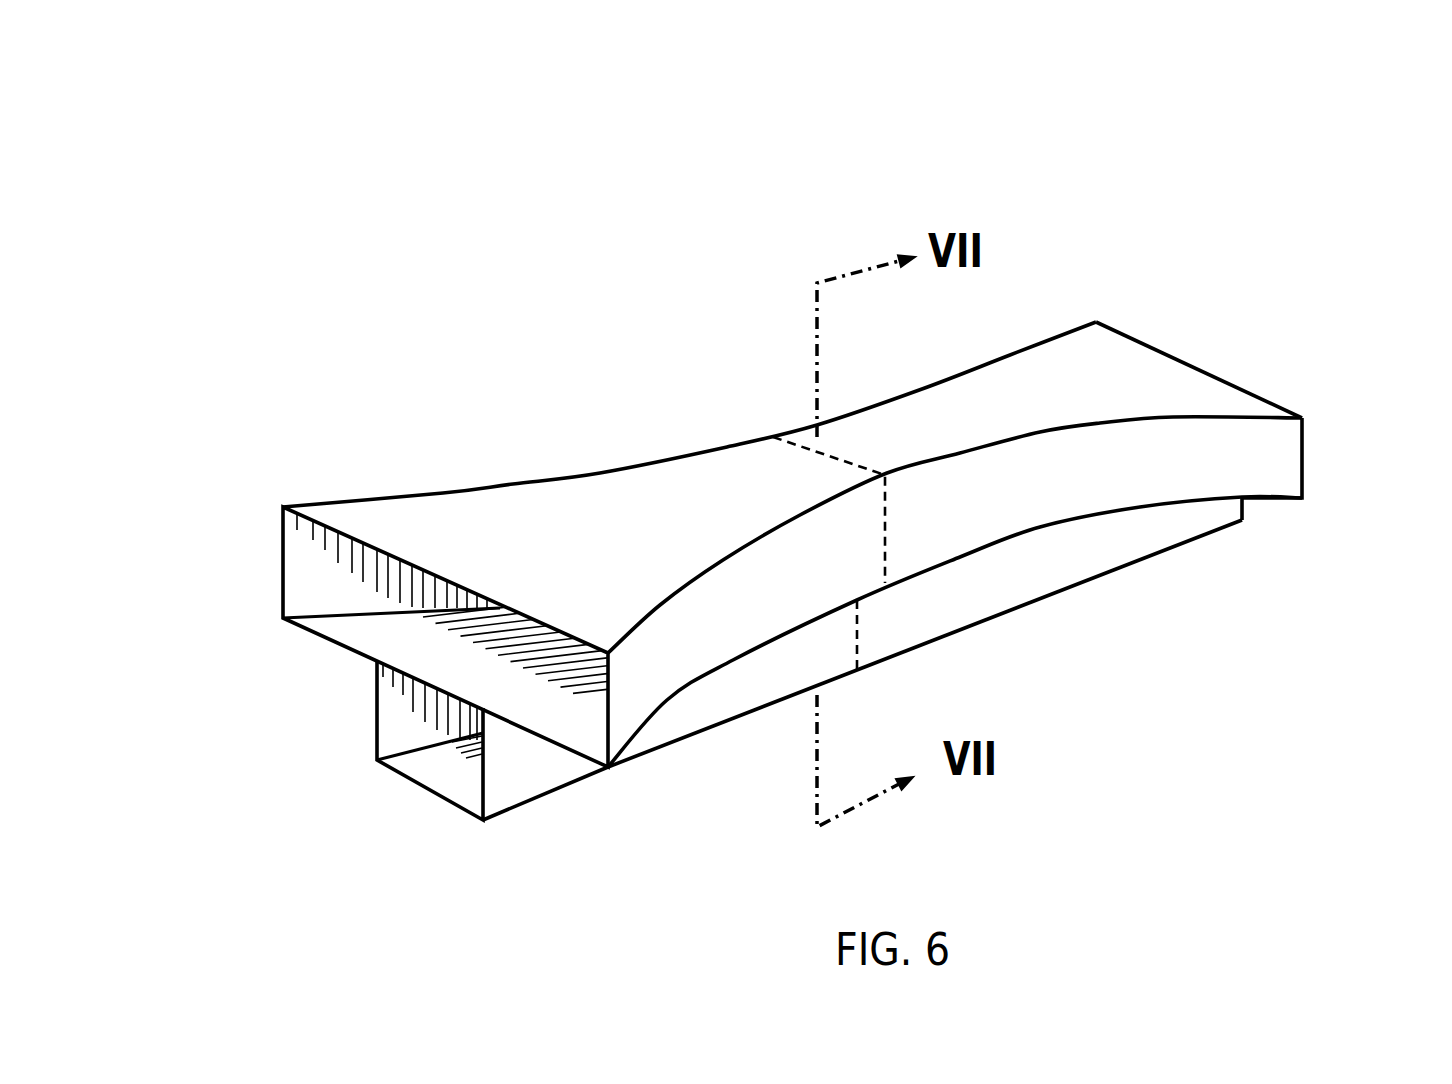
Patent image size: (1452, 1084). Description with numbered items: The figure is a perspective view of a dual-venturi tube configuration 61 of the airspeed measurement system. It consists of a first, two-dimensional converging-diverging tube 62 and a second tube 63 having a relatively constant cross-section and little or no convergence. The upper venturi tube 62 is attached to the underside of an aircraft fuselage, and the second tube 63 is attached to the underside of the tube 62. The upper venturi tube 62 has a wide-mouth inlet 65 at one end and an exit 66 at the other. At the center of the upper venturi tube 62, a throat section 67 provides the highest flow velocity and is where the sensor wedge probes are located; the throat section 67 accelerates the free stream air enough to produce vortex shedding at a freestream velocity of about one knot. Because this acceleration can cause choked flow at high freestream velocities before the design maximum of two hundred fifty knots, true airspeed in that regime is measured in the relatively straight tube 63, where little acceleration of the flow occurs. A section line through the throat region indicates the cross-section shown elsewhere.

The dual-venturi tube configuration 61 is at (789, 478).
The two-dimensional converging-diverging tube 62 is at (588, 473).
The second tube 63 is at (743, 717).
The wide-mouth inlet 65 is at (280, 550).
The exit 66 is at (1303, 462).
The throat section 67 is at (888, 537).